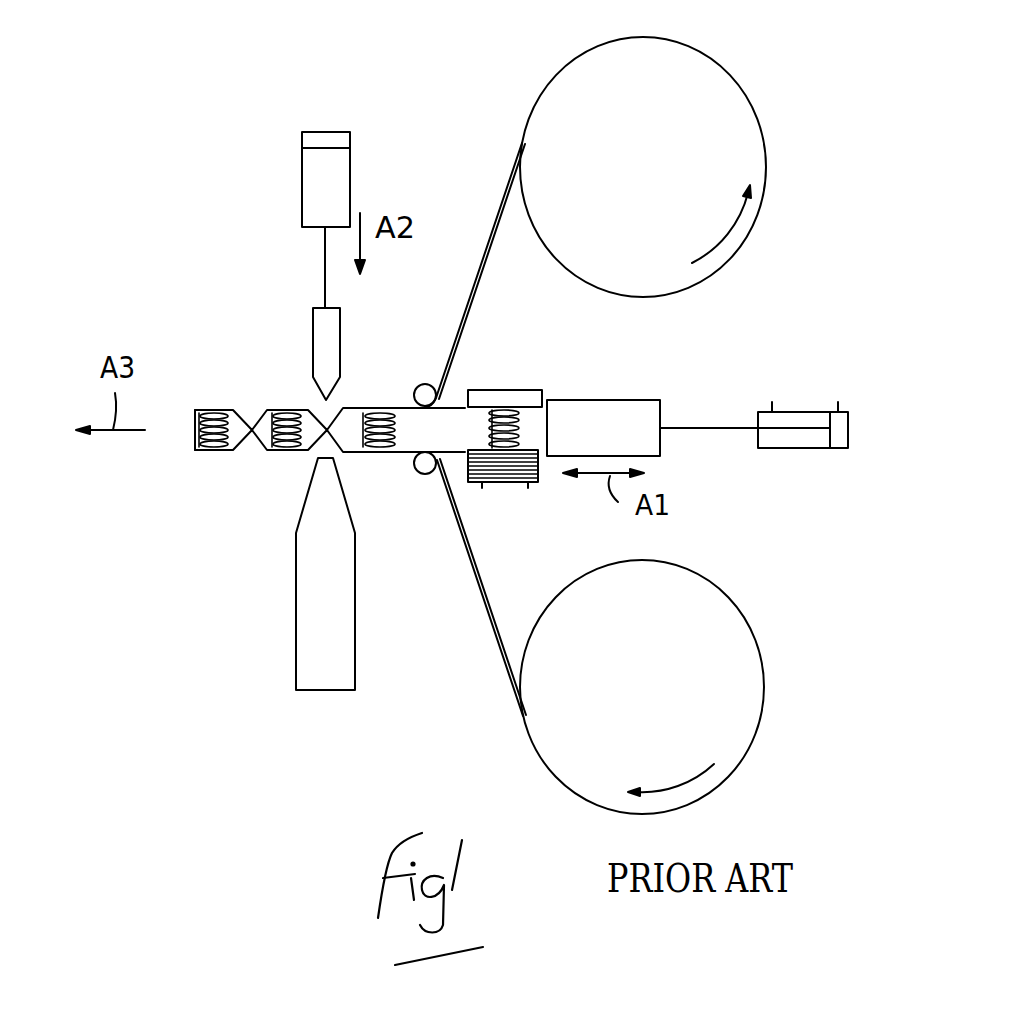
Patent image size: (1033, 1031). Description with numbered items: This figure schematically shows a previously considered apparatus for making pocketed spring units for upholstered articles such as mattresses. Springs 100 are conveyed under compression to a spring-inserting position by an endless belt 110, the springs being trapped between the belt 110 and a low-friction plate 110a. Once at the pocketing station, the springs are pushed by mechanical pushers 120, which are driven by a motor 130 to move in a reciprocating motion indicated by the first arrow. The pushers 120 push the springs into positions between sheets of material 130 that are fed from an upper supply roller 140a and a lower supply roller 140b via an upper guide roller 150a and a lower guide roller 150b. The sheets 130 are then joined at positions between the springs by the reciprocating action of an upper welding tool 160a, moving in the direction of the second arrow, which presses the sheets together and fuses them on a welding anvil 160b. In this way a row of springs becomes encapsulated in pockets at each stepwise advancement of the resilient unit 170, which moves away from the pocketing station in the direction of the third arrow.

The springs 100 is at (285, 408).
The endless belt 110 is at (532, 484).
The low-friction plate 110a is at (507, 388).
The mechanical pushers 120 is at (635, 410).
The sheets of material 130 is at (500, 203).
The upper supply roller 140a is at (752, 172).
The lower supply roller 140b is at (732, 646).
The upper guide roller 150a is at (412, 388).
The lower guide roller 150b is at (420, 476).
The upper welding tool 160a is at (330, 327).
The welding anvil 160b is at (308, 621).
The resilient unit 170 is at (180, 395).